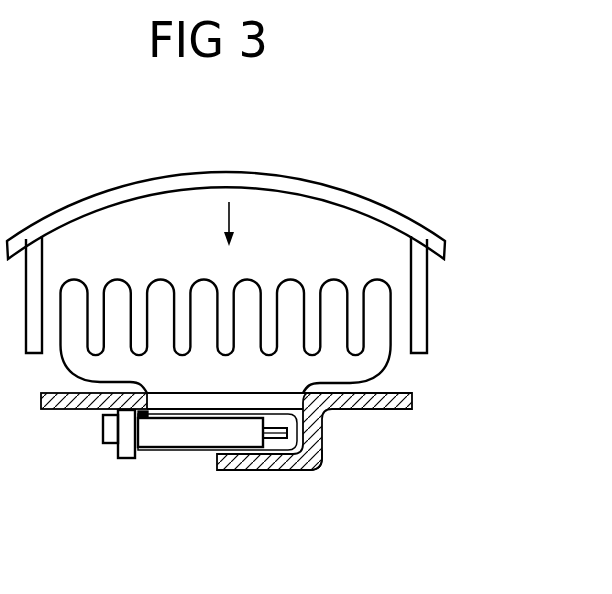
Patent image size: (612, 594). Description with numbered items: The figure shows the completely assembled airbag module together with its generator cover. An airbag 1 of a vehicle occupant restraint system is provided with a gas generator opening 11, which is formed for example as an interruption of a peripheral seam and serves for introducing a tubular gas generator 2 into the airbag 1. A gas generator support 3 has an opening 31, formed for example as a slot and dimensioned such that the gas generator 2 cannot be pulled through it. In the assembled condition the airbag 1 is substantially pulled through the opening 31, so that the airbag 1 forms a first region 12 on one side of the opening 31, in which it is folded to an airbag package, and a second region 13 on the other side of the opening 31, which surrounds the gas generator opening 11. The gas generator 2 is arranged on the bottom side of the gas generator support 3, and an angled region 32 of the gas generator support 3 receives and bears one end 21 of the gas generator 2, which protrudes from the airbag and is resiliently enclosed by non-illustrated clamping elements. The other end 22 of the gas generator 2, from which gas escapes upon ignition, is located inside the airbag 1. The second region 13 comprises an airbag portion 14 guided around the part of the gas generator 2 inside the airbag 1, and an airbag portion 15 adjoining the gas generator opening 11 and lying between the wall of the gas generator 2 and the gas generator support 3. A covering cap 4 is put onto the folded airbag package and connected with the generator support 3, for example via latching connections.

The airbag 1 is at (250, 277).
The gas generator 2 is at (178, 430).
The gas generator support 3 is at (387, 403).
The covering cap 4 is at (332, 193).
The gas generator opening 11 is at (138, 448).
The first region 12 is at (158, 262).
The second region 13 is at (205, 460).
The airbag portion 14 is at (307, 443).
The airbag portion 15 is at (149, 419).
The one end of the gas generator 21 is at (125, 436).
The other end of the gas generator 22 is at (275, 435).
The opening 31 is at (240, 385).
The angled region 32 is at (295, 462).